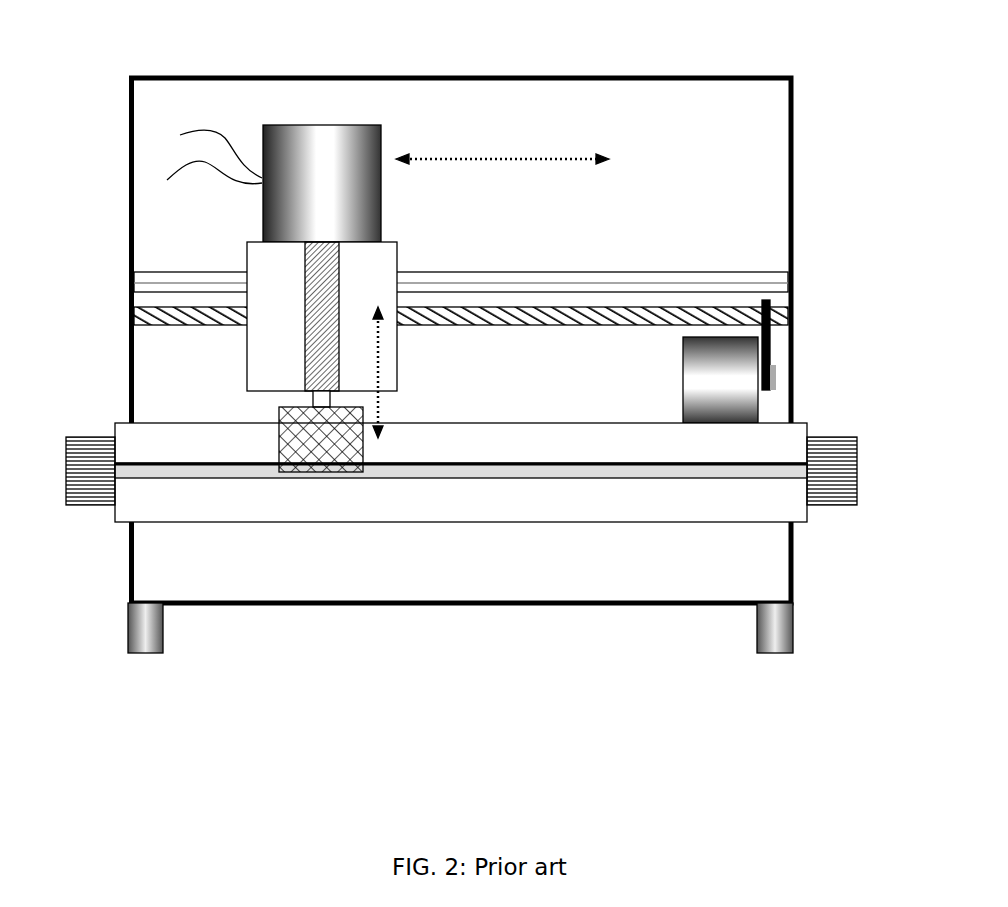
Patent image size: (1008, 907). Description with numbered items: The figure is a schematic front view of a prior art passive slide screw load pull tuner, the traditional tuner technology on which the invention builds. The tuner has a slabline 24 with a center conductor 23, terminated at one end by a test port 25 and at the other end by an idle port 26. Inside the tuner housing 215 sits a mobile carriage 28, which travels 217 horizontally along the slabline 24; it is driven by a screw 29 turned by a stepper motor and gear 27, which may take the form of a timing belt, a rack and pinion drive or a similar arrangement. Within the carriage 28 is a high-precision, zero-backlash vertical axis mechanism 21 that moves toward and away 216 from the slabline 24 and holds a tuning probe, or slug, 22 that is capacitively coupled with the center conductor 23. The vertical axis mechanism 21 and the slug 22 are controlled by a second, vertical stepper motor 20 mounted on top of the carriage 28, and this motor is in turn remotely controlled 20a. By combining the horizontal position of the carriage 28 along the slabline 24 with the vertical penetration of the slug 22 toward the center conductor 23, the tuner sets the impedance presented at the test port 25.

The vertical stepper motor 20 is at (307, 123).
The remote control 20a is at (203, 157).
The vertical axis mechanism 21 is at (305, 348).
The tuning probe (slug) 22 is at (362, 440).
The center conductor 23 is at (238, 472).
The slabline 24 is at (592, 503).
The test port 25 is at (83, 505).
The idle port 26 is at (833, 505).
The stepper motor and gear 27 is at (762, 407).
The mobile carriage 28 is at (247, 256).
The screw 29 is at (678, 307).
The tuner housing 215 is at (692, 563).
The vertical movement 216 is at (340, 348).
The horizontal travel 217 is at (468, 158).